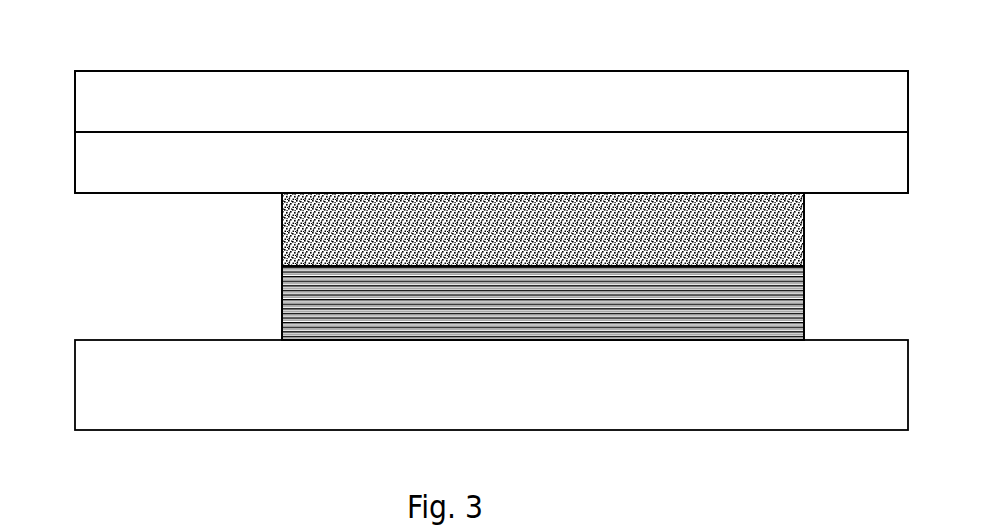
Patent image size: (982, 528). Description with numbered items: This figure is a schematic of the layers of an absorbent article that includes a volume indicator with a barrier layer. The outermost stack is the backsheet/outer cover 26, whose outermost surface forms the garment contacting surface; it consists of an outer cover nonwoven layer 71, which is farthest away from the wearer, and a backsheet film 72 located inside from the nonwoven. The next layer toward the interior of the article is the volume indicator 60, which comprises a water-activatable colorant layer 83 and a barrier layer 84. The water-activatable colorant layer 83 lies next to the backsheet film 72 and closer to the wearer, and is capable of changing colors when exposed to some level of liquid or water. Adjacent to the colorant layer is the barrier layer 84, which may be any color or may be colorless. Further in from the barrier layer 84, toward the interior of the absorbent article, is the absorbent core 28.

The outer cover 26 is at (67, 72).
The outer cover nonwoven layer 71 is at (123, 83).
The backsheet film 72 is at (128, 182).
The volume indicator 60 is at (817, 202).
The water-activatable colorant layer 83 is at (290, 237).
The barrier layer 84 is at (290, 293).
The absorbent core 28 is at (128, 412).